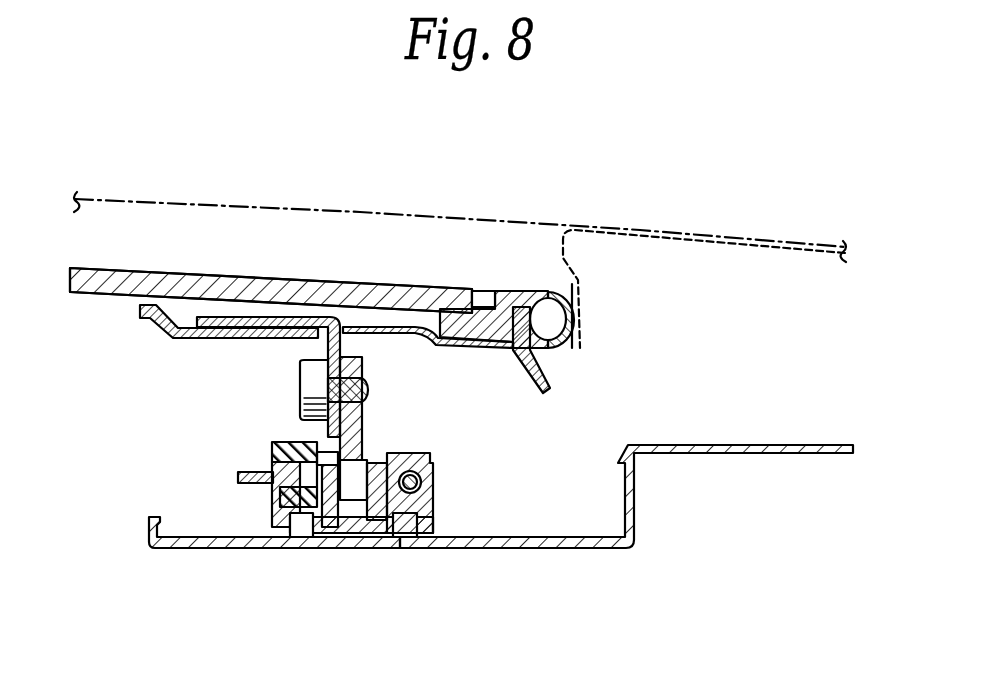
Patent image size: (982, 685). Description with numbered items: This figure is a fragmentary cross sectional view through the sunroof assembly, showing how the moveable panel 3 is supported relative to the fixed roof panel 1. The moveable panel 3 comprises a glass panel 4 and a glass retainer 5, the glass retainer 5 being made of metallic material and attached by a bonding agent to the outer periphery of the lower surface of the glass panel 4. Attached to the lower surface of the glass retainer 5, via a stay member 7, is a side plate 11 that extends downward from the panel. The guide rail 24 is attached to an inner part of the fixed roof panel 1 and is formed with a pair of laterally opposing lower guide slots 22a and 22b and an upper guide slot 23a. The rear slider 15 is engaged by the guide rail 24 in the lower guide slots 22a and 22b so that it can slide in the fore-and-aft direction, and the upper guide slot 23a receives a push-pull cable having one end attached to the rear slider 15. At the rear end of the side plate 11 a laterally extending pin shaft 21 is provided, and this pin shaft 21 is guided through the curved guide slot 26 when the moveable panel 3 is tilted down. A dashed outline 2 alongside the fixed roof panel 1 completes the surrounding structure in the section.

The fixed roof panel 1 is at (678, 228).
The roof opening edge 2 is at (558, 256).
The moveable panel 3 is at (184, 270).
The glass panel 4 is at (243, 284).
The glass retainer 5 is at (226, 337).
The stay member 7 is at (320, 339).
The side plate 11 is at (356, 431).
The rear slider 15 is at (290, 443).
The pin shaft 21 is at (278, 473).
The lower guide slot 22a is at (434, 521).
The lower guide slot 22b is at (276, 527).
The upper guide slot 23a is at (417, 464).
The guide rail 24 is at (438, 499).
The curved guide slot 26 is at (280, 489).